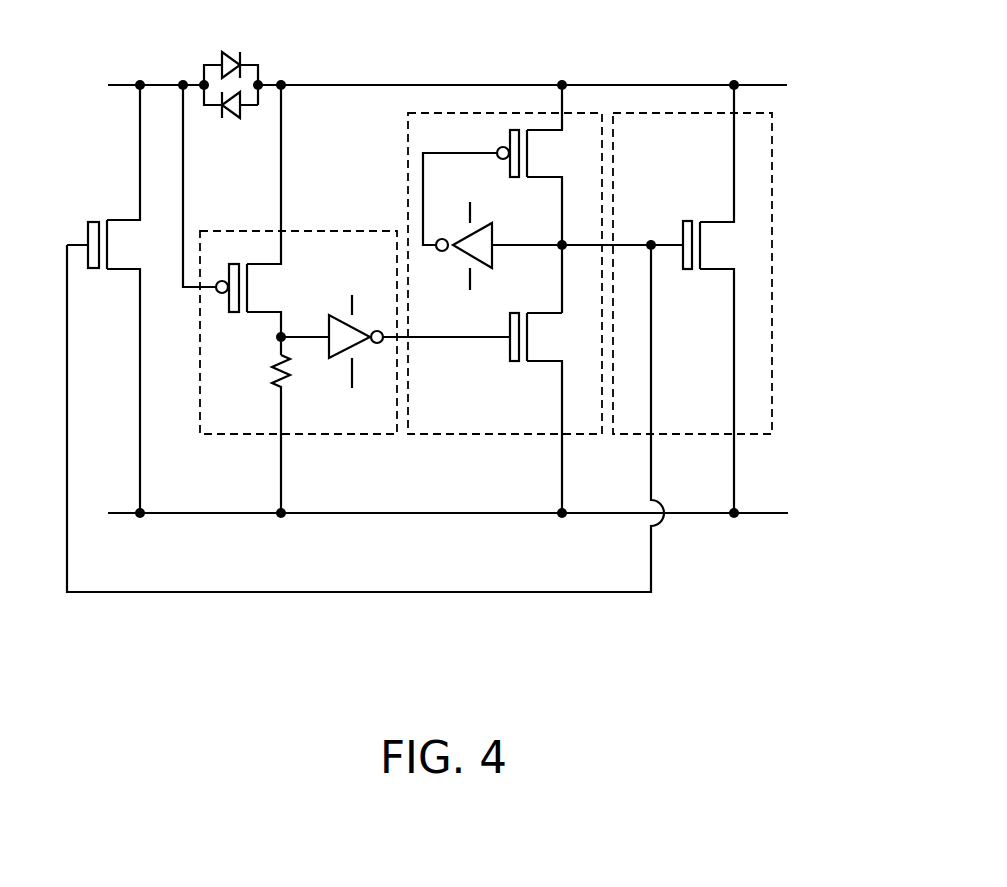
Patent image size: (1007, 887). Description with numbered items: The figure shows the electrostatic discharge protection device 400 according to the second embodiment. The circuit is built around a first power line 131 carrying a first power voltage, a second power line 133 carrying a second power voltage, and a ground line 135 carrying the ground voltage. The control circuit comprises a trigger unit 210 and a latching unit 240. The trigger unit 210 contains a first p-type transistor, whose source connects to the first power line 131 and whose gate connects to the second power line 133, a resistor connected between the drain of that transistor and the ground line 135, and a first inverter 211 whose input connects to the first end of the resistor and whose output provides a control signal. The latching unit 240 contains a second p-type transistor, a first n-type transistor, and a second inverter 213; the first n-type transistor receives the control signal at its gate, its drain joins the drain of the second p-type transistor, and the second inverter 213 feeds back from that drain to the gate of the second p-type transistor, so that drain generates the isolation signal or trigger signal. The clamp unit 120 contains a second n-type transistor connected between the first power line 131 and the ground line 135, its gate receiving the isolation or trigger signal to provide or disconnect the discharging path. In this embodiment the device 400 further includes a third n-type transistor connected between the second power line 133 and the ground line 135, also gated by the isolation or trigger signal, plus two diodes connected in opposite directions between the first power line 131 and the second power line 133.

The electrostatic discharge protection device 400 is at (444, 330).
The power line 133 is at (166, 83).
The power line 131 is at (526, 83).
The ground line 135 is at (528, 516).
The trigger unit 210 is at (346, 299).
The inverter 211 is at (382, 317).
The inverter 213 is at (515, 221).
The latching unit 240 is at (545, 299).
The clamp unit 120 is at (633, 437).